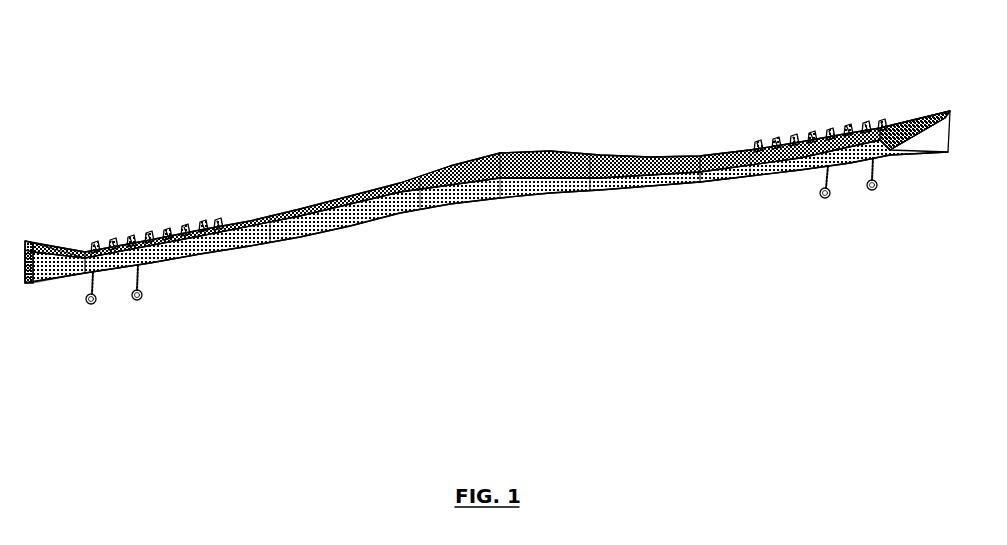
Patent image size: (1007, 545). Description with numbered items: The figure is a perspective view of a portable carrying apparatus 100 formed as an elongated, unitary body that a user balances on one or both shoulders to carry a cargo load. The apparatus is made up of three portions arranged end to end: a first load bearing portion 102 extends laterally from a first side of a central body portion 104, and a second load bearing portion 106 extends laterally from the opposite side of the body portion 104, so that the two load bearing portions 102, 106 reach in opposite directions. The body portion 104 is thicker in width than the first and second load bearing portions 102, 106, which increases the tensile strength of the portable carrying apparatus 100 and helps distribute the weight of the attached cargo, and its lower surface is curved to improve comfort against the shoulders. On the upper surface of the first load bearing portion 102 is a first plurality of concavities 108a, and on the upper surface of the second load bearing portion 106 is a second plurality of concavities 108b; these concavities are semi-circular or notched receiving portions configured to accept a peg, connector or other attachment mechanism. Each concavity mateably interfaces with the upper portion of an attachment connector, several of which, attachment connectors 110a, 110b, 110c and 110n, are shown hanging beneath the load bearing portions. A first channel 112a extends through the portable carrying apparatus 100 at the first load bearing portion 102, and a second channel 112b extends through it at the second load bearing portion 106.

The portable carrying apparatus 100 is at (366, 72).
The first load bearing portion 102 is at (120, 210).
The body portion 104 is at (490, 150).
The second load bearing portion 106 is at (744, 127).
The first plurality of concavities 108a is at (83, 230).
The second plurality of concavities 108b is at (748, 138).
The attachment connector 110a is at (86, 290).
The attachment connector 110b is at (143, 280).
The attachment connector 110c is at (818, 177).
The attachment connector 110n is at (880, 176).
The first channel 112a is at (202, 241).
The second channel 112b is at (772, 160).